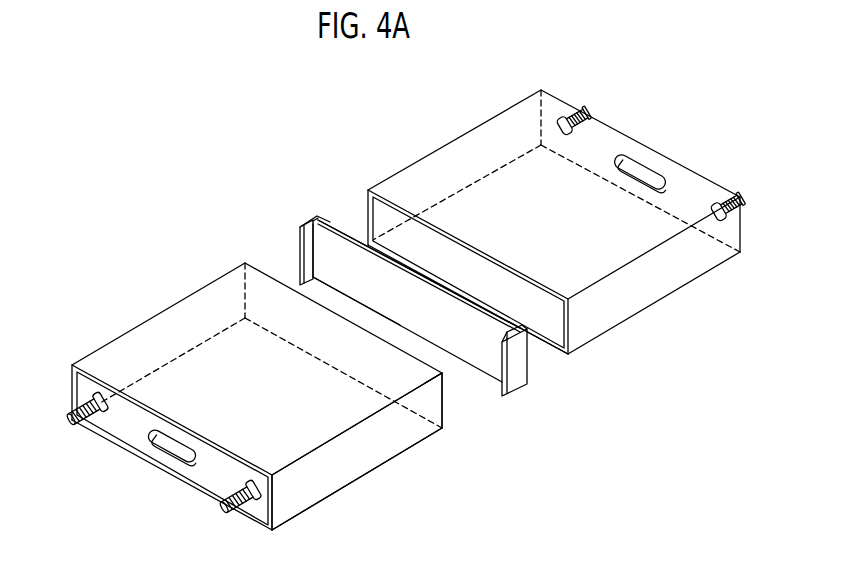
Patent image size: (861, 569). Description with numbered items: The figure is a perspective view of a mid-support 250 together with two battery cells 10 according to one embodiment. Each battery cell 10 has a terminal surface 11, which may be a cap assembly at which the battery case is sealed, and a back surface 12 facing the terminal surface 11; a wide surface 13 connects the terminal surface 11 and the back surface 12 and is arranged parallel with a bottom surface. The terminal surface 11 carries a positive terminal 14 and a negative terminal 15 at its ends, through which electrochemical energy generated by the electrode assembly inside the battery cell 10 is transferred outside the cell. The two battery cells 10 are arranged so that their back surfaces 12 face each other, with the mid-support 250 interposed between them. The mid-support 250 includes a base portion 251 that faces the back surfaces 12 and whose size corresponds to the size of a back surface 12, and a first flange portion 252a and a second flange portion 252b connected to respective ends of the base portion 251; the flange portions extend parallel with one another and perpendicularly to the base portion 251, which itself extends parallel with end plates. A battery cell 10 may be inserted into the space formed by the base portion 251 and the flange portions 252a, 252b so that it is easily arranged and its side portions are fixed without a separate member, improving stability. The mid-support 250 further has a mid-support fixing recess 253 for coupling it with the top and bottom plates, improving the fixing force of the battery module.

The battery cell 10 is at (143, 310).
The terminal surface 11 is at (125, 432).
The back surface 12 is at (538, 340).
The wide surface 13 is at (347, 413).
The positive terminal 14 is at (68, 418).
The negative terminal 15 is at (224, 506).
The mid-support 250 is at (407, 262).
The base portion 251 is at (484, 362).
The first flange portion 252a is at (517, 372).
The second flange portion 252b is at (298, 232).
The mid-support fixing recess 253 is at (495, 323).